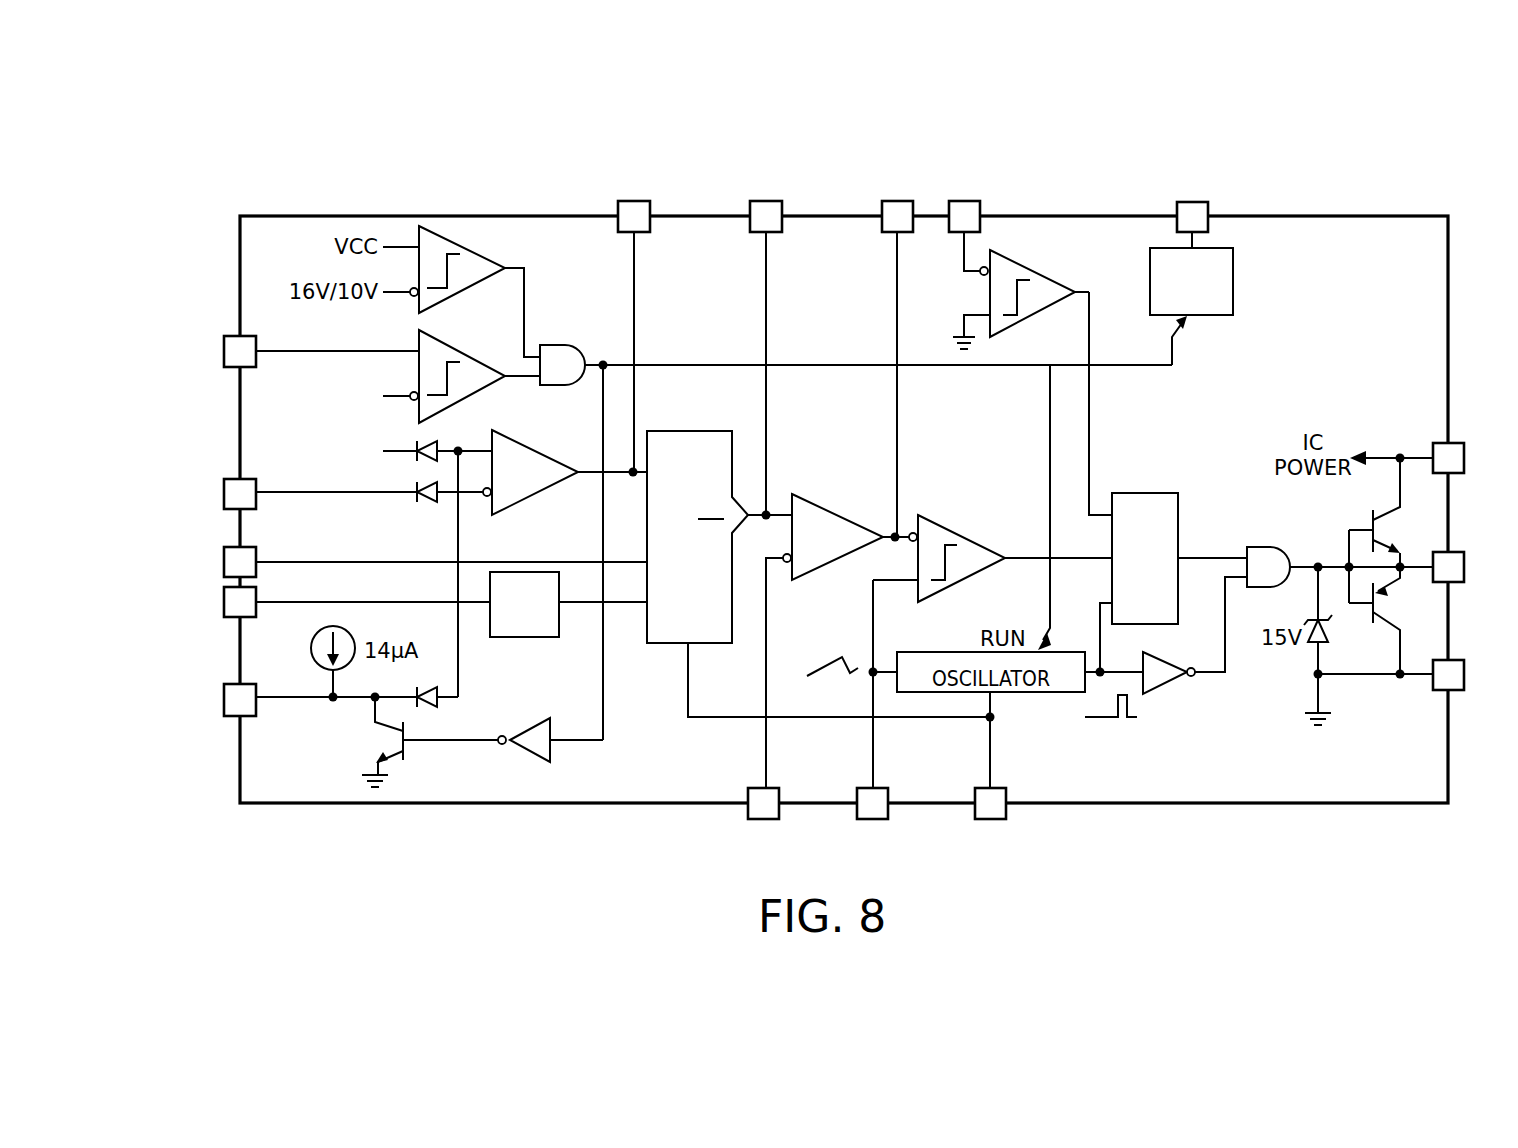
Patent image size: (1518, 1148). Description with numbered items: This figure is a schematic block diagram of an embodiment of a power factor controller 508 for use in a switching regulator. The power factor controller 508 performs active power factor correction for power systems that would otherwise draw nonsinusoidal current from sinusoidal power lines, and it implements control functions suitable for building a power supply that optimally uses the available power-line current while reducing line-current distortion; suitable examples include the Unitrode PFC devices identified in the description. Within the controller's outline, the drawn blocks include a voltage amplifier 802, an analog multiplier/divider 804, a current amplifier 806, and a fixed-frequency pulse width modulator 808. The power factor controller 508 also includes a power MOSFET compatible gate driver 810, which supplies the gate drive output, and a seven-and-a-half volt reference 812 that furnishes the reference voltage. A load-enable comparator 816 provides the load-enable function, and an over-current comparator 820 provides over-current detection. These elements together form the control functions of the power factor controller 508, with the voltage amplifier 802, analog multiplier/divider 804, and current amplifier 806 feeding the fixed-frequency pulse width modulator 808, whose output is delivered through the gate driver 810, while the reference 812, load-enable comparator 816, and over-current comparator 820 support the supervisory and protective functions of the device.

The power factor controller 508 is at (306, 168).
The voltage amplifier 802 is at (543, 440).
The analog multiplier/divider 804 is at (690, 430).
The current amplifier 806 is at (836, 512).
The fixed-frequency pulse width modulator 808 is at (1212, 496).
The power MOSFET compatible gate driver 810 is at (1383, 531).
The 7.5 volt reference 812 is at (1235, 280).
The load-enable comparator 816 is at (465, 345).
The over-current comparator 820 is at (1040, 270).